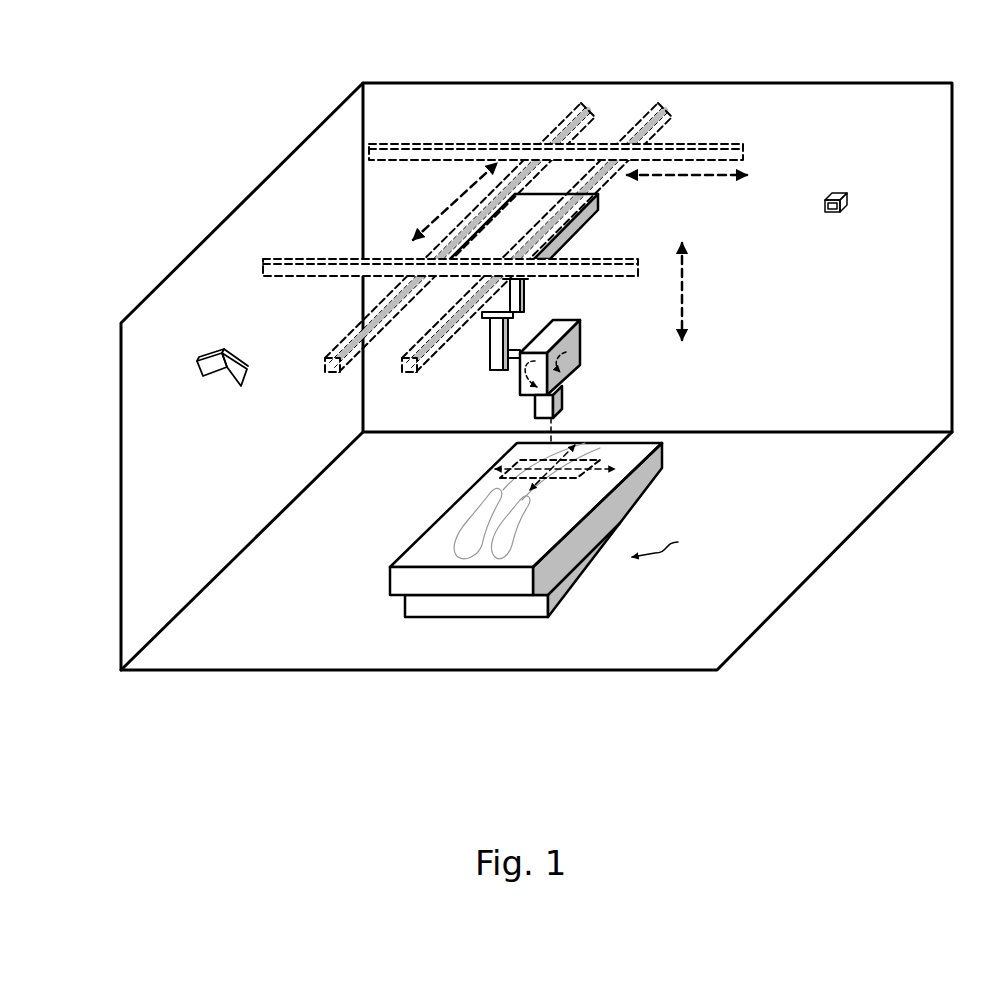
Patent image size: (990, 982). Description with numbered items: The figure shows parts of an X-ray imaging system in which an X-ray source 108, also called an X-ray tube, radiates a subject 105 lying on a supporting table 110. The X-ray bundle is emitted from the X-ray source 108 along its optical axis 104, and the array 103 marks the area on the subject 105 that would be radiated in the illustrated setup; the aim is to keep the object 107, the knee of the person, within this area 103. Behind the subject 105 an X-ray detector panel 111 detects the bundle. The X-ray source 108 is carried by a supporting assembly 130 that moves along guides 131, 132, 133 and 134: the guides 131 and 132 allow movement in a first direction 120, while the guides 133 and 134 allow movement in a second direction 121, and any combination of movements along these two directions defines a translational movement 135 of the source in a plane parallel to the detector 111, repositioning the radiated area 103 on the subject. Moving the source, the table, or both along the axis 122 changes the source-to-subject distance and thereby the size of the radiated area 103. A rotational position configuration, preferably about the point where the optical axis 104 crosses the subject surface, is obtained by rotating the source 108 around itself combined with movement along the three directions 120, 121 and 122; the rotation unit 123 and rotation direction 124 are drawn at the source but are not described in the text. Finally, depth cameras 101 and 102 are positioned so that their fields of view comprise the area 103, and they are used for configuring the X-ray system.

The depth camera 101 is at (839, 193).
The depth camera 102 is at (226, 355).
The radiated area 103 is at (600, 462).
The optical axis 104 is at (550, 453).
The subject 105 is at (540, 508).
The object 107 is at (483, 533).
The X-ray source 108 is at (570, 394).
The supporting table 110 is at (677, 543).
The X-ray detector panel 111 is at (393, 585).
The first direction 120 is at (470, 171).
The second direction 121 is at (672, 181).
The axis 122 is at (685, 283).
The rotation unit 123 is at (580, 346).
The rotation direction 124 is at (520, 387).
The supporting assembly 130 is at (568, 251).
The guide 131 is at (659, 106).
The guide 132 is at (582, 103).
The guide 133 is at (478, 143).
The guide 134 is at (401, 258).
The translational movement 135 is at (541, 484).